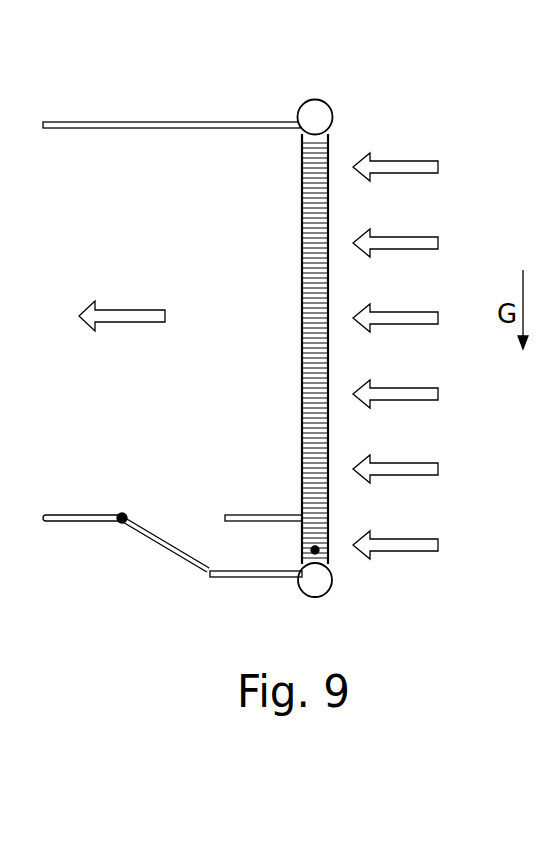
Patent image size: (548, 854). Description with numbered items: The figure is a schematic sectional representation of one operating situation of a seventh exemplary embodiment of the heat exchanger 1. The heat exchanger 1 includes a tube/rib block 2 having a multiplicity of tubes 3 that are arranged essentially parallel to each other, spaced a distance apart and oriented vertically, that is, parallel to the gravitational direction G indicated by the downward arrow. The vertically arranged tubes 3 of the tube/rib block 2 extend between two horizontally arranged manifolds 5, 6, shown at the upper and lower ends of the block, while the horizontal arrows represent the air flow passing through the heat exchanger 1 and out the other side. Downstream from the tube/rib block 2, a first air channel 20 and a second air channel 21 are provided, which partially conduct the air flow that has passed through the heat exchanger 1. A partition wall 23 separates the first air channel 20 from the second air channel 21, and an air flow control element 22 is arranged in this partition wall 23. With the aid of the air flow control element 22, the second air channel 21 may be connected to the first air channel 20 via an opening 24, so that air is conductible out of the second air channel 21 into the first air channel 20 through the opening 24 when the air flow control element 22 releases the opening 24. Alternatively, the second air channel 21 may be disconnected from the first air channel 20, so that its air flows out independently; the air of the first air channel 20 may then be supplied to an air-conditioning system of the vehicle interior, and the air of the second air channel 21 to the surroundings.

The heat exchanger 1 is at (324, 327).
The tube/rib block 2 is at (318, 270).
The tubes 3 is at (318, 175).
The manifold 5 is at (316, 110).
The manifold 6 is at (317, 585).
The first air channel 20 is at (172, 505).
The second air channel 21 is at (253, 560).
The air flow control element 22 is at (190, 550).
The partition wall 23 is at (80, 512).
The opening 24 is at (150, 516).